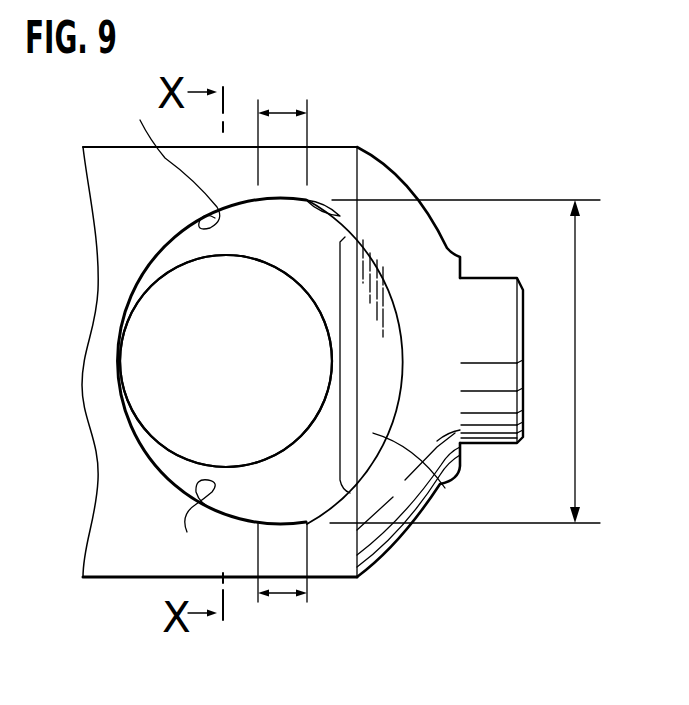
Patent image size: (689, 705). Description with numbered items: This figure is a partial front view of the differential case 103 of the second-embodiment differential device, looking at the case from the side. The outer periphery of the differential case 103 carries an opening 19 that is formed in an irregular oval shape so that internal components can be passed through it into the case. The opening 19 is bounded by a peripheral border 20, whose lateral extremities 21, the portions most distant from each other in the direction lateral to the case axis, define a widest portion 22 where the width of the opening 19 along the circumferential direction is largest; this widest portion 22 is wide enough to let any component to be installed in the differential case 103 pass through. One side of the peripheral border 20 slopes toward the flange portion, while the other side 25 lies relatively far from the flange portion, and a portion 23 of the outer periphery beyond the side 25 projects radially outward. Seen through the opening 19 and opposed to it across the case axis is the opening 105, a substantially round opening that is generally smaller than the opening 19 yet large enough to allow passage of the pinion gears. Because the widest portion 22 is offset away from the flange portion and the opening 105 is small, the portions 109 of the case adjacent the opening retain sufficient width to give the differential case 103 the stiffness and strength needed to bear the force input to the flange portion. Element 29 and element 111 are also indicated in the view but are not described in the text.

The opening 19 is at (320, 248).
The peripheral border 20 is at (170, 329).
The lateral extremities 21 is at (283, 110).
The widest portion 22 is at (576, 361).
The portion 23 is at (440, 486).
The side 25 is at (326, 419).
The shaft portion 29 is at (488, 277).
The differential case 103 is at (392, 128).
The opening 105 is at (187, 254).
The portion 109 is at (160, 198).
The inner hole 111 is at (322, 333).